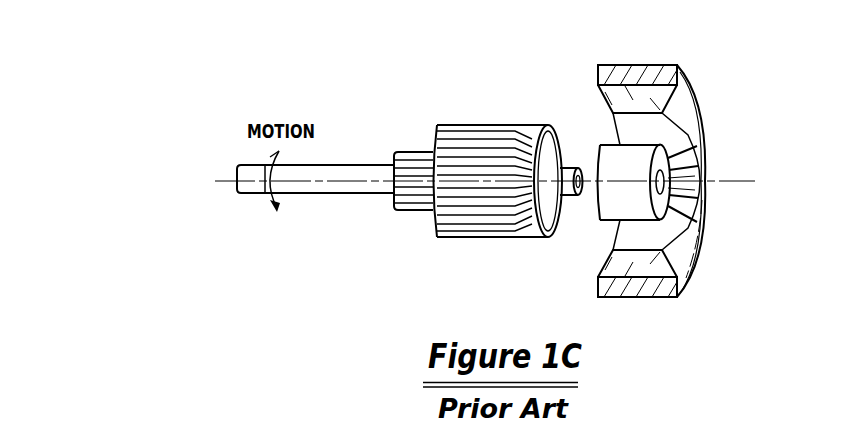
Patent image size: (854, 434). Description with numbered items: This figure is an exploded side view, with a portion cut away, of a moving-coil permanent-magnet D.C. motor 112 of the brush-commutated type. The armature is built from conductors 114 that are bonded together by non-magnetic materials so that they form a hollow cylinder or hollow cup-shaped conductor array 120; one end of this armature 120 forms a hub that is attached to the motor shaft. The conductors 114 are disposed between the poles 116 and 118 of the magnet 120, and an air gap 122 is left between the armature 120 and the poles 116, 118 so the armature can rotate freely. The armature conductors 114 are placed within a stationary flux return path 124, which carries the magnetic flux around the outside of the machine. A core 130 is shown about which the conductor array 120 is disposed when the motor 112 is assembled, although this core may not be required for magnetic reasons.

The moving-coil permanent-magnet D.C. motor 112 is at (443, 99).
The conductors 114 is at (461, 125).
The pole 116 is at (690, 172).
The pole 118 is at (690, 100).
The magnet / hollow cup-shaped conductor array (armature) 120 is at (641, 65).
The air gap 122 is at (592, 107).
The stationary flux return path 124 is at (708, 277).
The core 130 is at (594, 230).